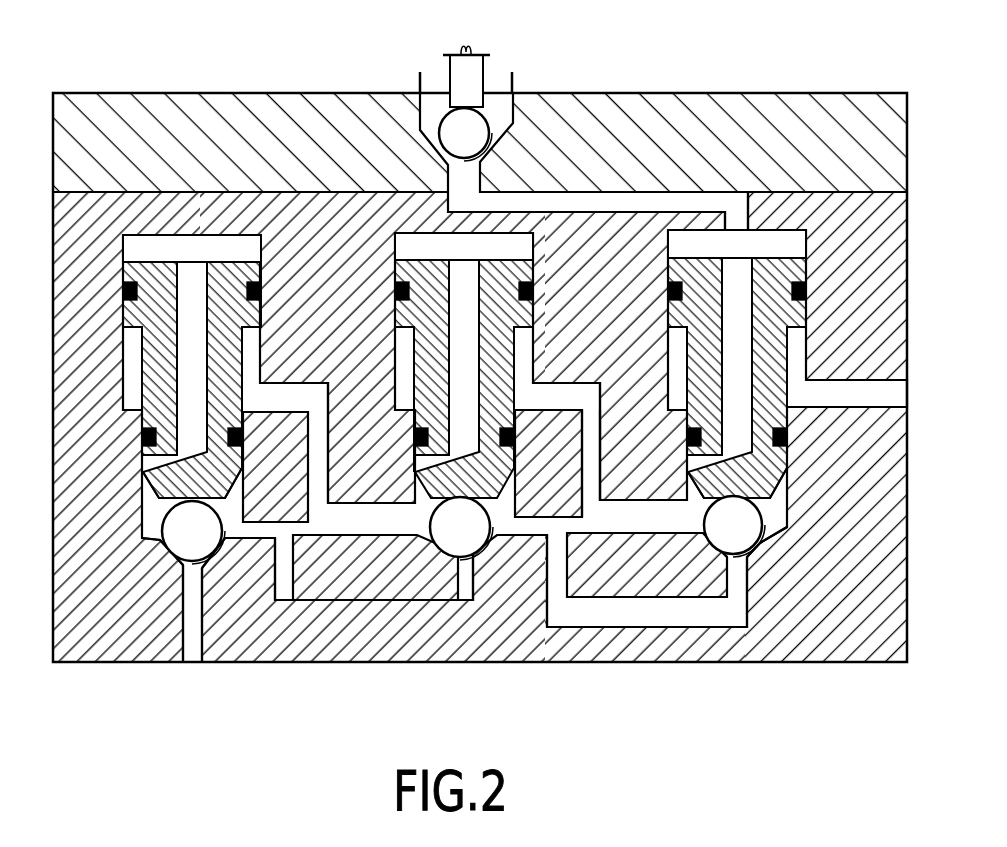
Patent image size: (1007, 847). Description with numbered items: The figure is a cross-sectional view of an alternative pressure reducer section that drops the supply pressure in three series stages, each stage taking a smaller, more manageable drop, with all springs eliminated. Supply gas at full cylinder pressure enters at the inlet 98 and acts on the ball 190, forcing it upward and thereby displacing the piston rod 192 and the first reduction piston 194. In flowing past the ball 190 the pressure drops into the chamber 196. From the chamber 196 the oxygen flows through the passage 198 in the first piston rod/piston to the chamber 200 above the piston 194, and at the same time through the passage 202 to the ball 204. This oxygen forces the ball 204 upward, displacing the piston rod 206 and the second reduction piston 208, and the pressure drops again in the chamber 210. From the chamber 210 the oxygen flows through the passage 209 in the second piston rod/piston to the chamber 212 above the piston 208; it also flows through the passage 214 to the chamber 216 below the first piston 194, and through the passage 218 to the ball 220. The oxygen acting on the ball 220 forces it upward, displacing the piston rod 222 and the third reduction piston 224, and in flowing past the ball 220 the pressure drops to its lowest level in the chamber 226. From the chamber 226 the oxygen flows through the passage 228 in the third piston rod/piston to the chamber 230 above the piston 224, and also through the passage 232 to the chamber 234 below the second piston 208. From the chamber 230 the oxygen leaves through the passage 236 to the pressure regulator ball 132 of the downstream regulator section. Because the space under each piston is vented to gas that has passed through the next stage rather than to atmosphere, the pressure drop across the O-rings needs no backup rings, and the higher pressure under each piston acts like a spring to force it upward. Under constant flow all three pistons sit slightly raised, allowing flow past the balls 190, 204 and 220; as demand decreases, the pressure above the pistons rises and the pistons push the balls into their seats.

The supply inlet 98 is at (192, 653).
The pressure regulator ball 132 is at (487, 127).
The ball 190 is at (207, 537).
The piston rod 192 is at (155, 492).
The first reduction piston 194 is at (157, 260).
The chamber 196 is at (155, 530).
The passage 198 is at (192, 385).
The chamber 200 is at (193, 248).
The passage 202 is at (377, 613).
The ball 204 is at (445, 540).
The piston rod 206 is at (508, 498).
The second reduction piston 208 is at (417, 255).
The passage 209 is at (465, 358).
The chamber 210 is at (500, 510).
The chamber 212 is at (433, 245).
The passage 214 is at (365, 523).
The chamber 216 is at (133, 362).
The passage 218 is at (650, 610).
The ball 220 is at (753, 528).
The piston rod 222 is at (777, 477).
The third reduction piston 224 is at (783, 247).
The chamber 226 is at (773, 503).
The passage 228 is at (738, 358).
The chamber 230 is at (765, 245).
The passage 232 is at (588, 438).
The chamber 234 is at (522, 350).
The passage 236 is at (597, 203).